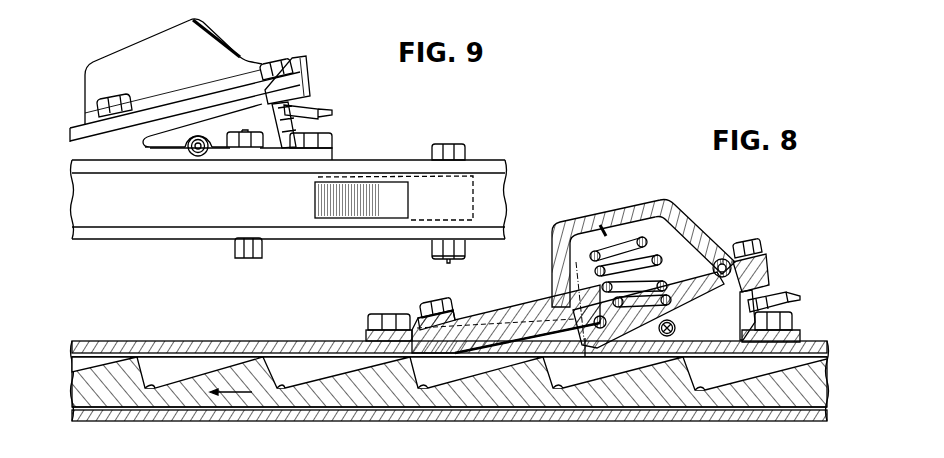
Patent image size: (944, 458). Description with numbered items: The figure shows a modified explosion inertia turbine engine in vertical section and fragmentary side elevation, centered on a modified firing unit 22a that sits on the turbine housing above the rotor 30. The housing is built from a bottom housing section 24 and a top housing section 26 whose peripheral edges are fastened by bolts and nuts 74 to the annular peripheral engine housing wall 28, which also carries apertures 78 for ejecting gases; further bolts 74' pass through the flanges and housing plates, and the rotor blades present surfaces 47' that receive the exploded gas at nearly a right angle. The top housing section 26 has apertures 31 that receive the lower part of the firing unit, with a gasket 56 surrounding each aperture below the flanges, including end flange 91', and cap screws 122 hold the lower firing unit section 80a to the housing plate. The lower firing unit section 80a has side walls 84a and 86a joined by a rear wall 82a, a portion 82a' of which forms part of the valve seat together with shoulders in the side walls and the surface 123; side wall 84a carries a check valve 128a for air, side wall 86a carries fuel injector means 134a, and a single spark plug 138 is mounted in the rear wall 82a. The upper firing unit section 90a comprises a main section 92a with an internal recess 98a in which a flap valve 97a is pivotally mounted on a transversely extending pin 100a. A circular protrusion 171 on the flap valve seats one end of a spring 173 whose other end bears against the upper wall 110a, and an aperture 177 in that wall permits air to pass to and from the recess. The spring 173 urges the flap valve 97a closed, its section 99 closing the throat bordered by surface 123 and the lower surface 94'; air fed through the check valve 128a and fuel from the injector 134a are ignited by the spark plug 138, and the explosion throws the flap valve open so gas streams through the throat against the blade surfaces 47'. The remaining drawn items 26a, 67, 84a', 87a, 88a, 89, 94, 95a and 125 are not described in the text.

In FIG. 9, the modified firing unit 22a is at (260, 44).
In FIG. 8, the modified firing unit 22a is at (712, 221).
In FIG. 8, the bottom housing section 24 is at (190, 420).
In FIG. 8, the top housing section 26 is at (168, 341).
In FIG. 9, the base plate 26a is at (382, 155).
In FIG. 9, the peripheral engine housing wall 28 is at (106, 204).
In FIG. 8, the rotor 30 is at (96, 389).
In FIG. 8, the apertures 31 is at (422, 338).
In FIG. 8, the blade surface 47' is at (449, 398).
In FIG. 8, the gasket 56 is at (364, 340).
In FIG. 8, the pedestal 67 is at (454, 322).
In FIG. 9, the bolts and nuts 74 is at (458, 195).
In FIG. 9, the bolts 74' is at (261, 255).
In FIG. 9, the apertures 78 is at (352, 208).
In FIG. 9, the lower firing unit section 80a is at (312, 84).
In FIG. 8, the lower firing unit section 80a is at (770, 282).
In FIG. 8, the rear wall 82a is at (731, 315).
In FIG. 8, the rear wall portion 82a' is at (723, 293).
In FIG. 8, the side wall 84a is at (702, 303).
In FIG. 8, the arm pin 84a' is at (608, 322).
In FIG. 9, the side wall 86a is at (164, 142).
In FIG. 9, the lever portion 87a is at (255, 153).
In FIG. 9, the nut 88a is at (240, 112).
In FIG. 9, the hex nut 89 is at (101, 103).
In FIG. 8, the hex nut 89 is at (436, 306).
In FIG. 9, the upper firing unit section 90a is at (228, 42).
In FIG. 8, the upper firing unit section 90a is at (686, 216).
In FIG. 8, the end flange 91' is at (353, 302).
In FIG. 9, the main section 92a is at (138, 61).
In FIG. 9, the clamp plate 94 is at (185, 106).
In FIG. 8, the clamp plate 94 is at (607, 292).
In FIG. 8, the lower surface 94' is at (519, 352).
In FIG. 8, the contact surface 95a is at (572, 344).
In FIG. 8, the flap valve 97a is at (688, 290).
In FIG. 8, the internal recess 98a is at (570, 280).
In FIG. 8, the flat valve section 99 is at (579, 303).
In FIG. 8, the pin 100a is at (725, 258).
In FIG. 8, the upper wall 110a is at (566, 238).
In FIG. 9, the cap screws 122 is at (324, 138).
In FIG. 8, the cap screws 122 is at (388, 316).
In FIG. 8, the surface 123 is at (586, 343).
In FIG. 8, the edge 125 is at (694, 350).
In FIG. 8, the check valve 128a is at (659, 329).
In FIG. 9, the fuel injector means 134a is at (197, 150).
In FIG. 9, the spark plug 138 is at (310, 105).
In FIG. 8, the spark plug 138 is at (766, 295).
In FIG. 8, the circular protrusion 171 is at (664, 283).
In FIG. 8, the spring 173 is at (648, 251).
In FIG. 8, the aperture 177 is at (606, 228).